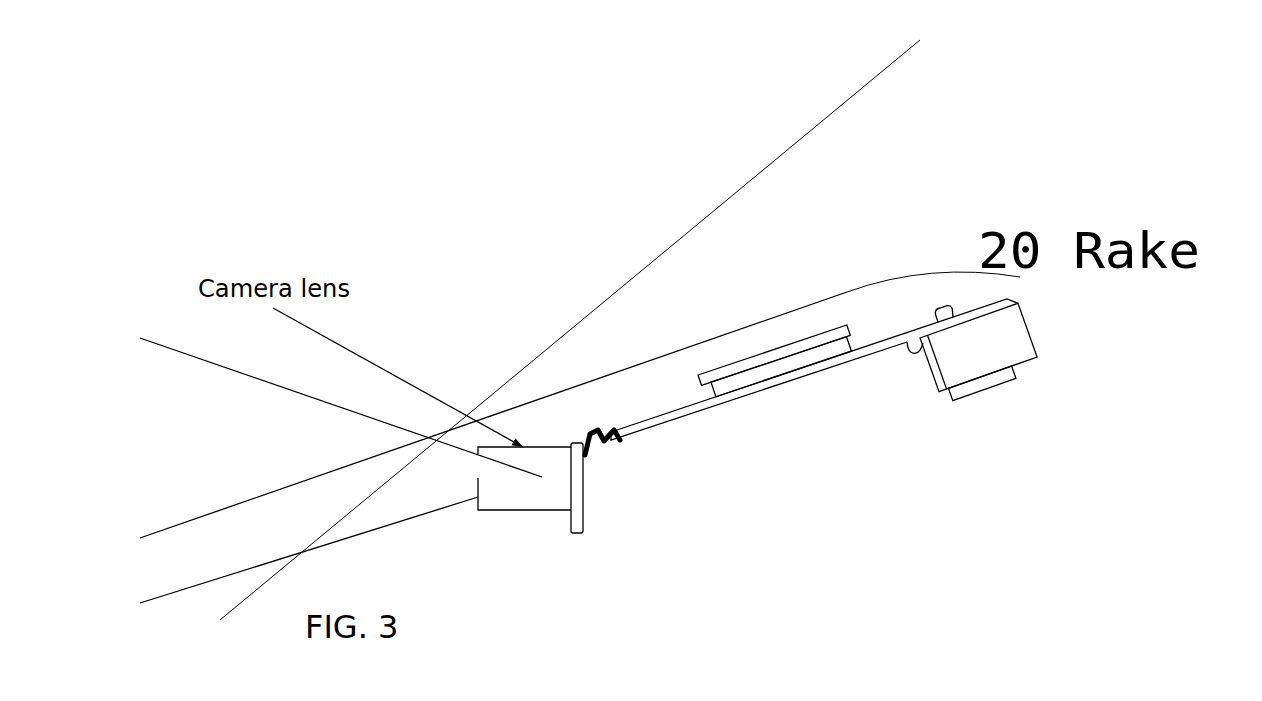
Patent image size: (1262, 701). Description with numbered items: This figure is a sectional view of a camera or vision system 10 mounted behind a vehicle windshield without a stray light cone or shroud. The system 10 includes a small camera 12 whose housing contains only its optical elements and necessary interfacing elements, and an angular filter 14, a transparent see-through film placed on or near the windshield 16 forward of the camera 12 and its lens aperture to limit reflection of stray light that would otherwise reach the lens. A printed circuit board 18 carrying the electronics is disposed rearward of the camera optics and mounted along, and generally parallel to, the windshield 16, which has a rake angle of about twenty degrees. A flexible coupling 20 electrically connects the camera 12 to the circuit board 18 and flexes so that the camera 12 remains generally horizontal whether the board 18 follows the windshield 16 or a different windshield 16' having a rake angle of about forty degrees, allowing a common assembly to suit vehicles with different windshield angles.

The camera or vision system 10 is at (567, 225).
The camera 12 is at (587, 519).
The angular filter 14 is at (395, 538).
The windshield 16 is at (588, 372).
The different windshield 16' is at (570, 330).
The printed circuit board 18 is at (818, 373).
The flexible coupling 20 is at (596, 425).